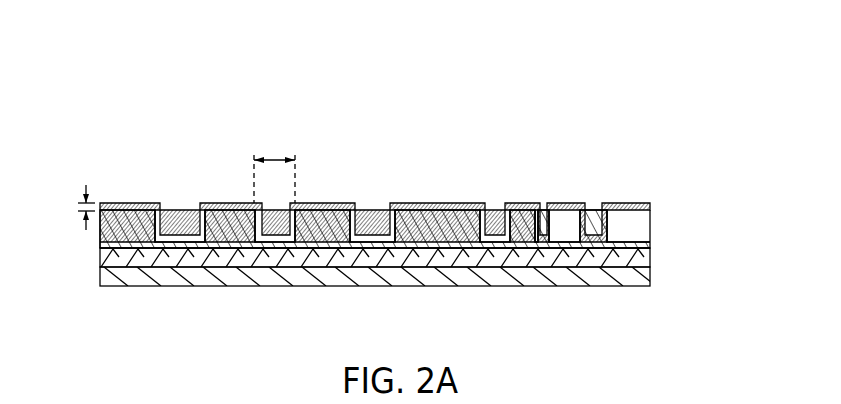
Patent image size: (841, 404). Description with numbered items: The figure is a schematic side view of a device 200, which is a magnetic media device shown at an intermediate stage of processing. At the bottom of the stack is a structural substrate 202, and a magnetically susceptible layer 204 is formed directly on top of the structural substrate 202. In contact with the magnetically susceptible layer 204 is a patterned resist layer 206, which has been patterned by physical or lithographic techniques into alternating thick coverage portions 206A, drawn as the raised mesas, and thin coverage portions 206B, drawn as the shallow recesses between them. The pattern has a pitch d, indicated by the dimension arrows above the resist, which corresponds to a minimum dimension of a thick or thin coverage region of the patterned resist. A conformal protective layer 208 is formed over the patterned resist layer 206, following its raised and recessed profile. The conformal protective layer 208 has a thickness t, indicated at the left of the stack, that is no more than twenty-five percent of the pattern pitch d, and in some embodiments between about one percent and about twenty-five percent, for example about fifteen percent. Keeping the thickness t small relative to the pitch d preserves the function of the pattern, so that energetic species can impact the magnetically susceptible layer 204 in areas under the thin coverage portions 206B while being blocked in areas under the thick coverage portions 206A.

The device 200 is at (430, 177).
The structural substrate 202 is at (652, 280).
The magnetically susceptible layer 204 is at (652, 254).
The patterned resist layer 206 is at (652, 213).
The thick coverage portions 206A is at (652, 229).
The thin coverage portions 206B is at (603, 258).
The conformal protective layer 208 is at (635, 203).
The pattern pitch d is at (274, 157).
The thickness t is at (78, 205).